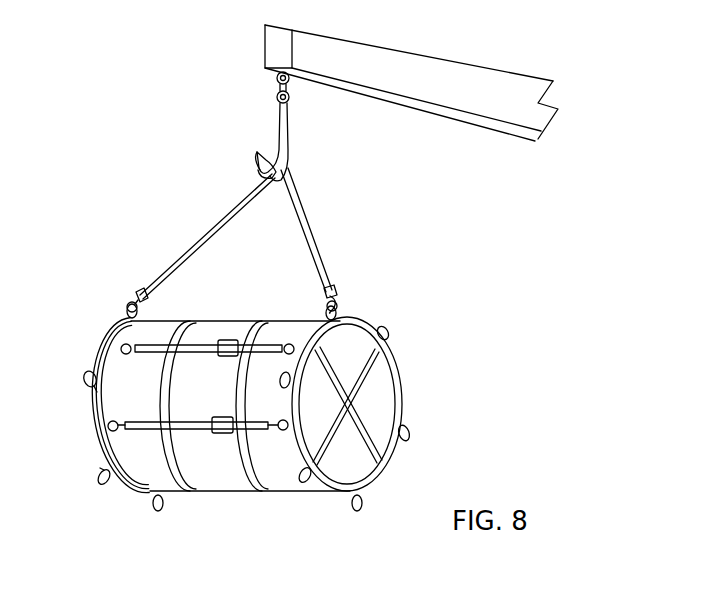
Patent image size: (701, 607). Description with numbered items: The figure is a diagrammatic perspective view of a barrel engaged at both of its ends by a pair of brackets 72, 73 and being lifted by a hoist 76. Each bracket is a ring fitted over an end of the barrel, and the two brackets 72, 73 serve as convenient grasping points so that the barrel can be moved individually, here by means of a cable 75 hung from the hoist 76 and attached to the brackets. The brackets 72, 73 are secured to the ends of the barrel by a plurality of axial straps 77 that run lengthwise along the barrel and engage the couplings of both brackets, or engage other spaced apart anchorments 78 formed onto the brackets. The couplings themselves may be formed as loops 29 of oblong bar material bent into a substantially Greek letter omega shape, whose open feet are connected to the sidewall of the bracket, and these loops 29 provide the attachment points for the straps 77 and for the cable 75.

The loop 29 is at (84, 376).
The bracket 72 is at (96, 440).
The bracket 73 is at (394, 368).
The cable 75 is at (311, 214).
The hoist 76 is at (390, 114).
The axial strap 77 is at (198, 336).
The anchorment 78 is at (115, 419).